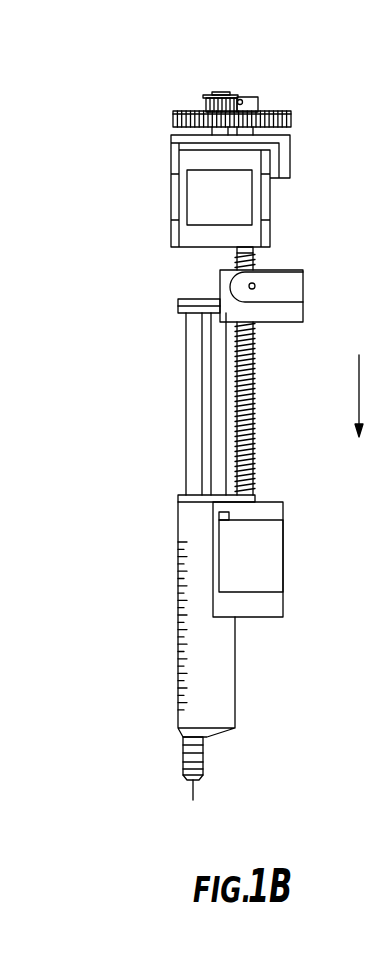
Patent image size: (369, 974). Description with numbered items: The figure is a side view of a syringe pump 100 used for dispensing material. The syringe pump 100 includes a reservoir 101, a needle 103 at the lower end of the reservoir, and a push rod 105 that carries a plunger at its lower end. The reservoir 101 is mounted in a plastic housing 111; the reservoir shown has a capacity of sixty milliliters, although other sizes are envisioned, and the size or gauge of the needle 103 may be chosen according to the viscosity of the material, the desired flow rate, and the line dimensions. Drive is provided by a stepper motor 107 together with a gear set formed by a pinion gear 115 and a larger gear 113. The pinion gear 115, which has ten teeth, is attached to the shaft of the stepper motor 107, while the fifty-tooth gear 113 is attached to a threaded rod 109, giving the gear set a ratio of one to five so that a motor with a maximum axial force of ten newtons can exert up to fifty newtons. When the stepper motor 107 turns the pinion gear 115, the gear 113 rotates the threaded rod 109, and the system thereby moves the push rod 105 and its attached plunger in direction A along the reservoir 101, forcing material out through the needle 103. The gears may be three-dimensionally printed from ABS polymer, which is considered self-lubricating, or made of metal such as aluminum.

The syringe pump 100 is at (113, 70).
The reservoir 101 is at (262, 672).
The needle 103 is at (197, 790).
The push rod 105 is at (197, 445).
The stepper motor 107 is at (205, 198).
The threaded rod 109 is at (245, 428).
The plastic housing 111 is at (267, 563).
The gear 113 is at (279, 112).
The pinion gear 115 is at (192, 115).